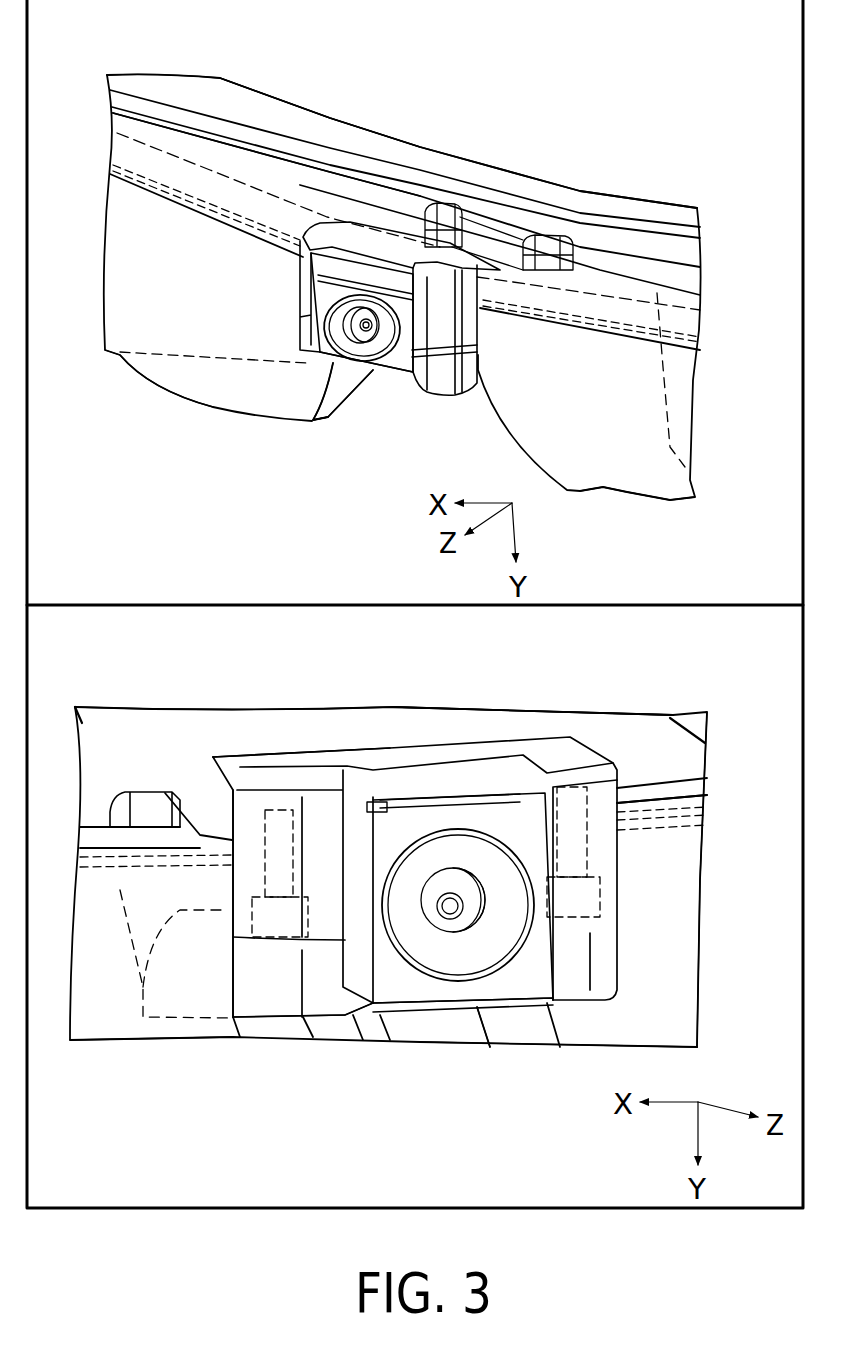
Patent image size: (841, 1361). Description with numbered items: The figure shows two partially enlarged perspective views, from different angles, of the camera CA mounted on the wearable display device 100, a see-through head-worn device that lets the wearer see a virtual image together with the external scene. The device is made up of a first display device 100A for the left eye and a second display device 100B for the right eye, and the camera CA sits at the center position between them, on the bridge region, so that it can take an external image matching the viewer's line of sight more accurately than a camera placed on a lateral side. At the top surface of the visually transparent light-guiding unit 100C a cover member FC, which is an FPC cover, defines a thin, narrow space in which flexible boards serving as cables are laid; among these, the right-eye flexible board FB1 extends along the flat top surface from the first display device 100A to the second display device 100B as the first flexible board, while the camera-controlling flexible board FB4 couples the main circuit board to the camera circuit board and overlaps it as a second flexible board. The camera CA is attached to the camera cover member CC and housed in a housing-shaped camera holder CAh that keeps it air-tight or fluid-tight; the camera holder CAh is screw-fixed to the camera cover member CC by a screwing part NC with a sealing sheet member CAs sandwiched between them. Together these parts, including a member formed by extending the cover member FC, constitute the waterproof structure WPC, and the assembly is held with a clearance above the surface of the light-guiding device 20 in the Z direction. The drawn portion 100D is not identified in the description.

The wearable display device 100 is at (442, 116).
The first display device 100A is at (608, 502).
The second display device 100B is at (125, 390).
The visually transparent light-guiding unit 100C is at (340, 422).
The light-guiding device 20 is at (409, 708).
The upper body panel 100D is at (380, 757).
The camera CA is at (310, 357).
The sealing sheet member CAs is at (373, 277).
The camera holder CAh is at (413, 367).
The camera cover member CC is at (333, 233).
The cover member FC is at (590, 283).
The camera-controlling flexible board FB4 is at (660, 315).
The right-eye flexible board FB1 is at (410, 458).
The screwing part NC is at (273, 877).
The waterproof structure WPC is at (373, 400).